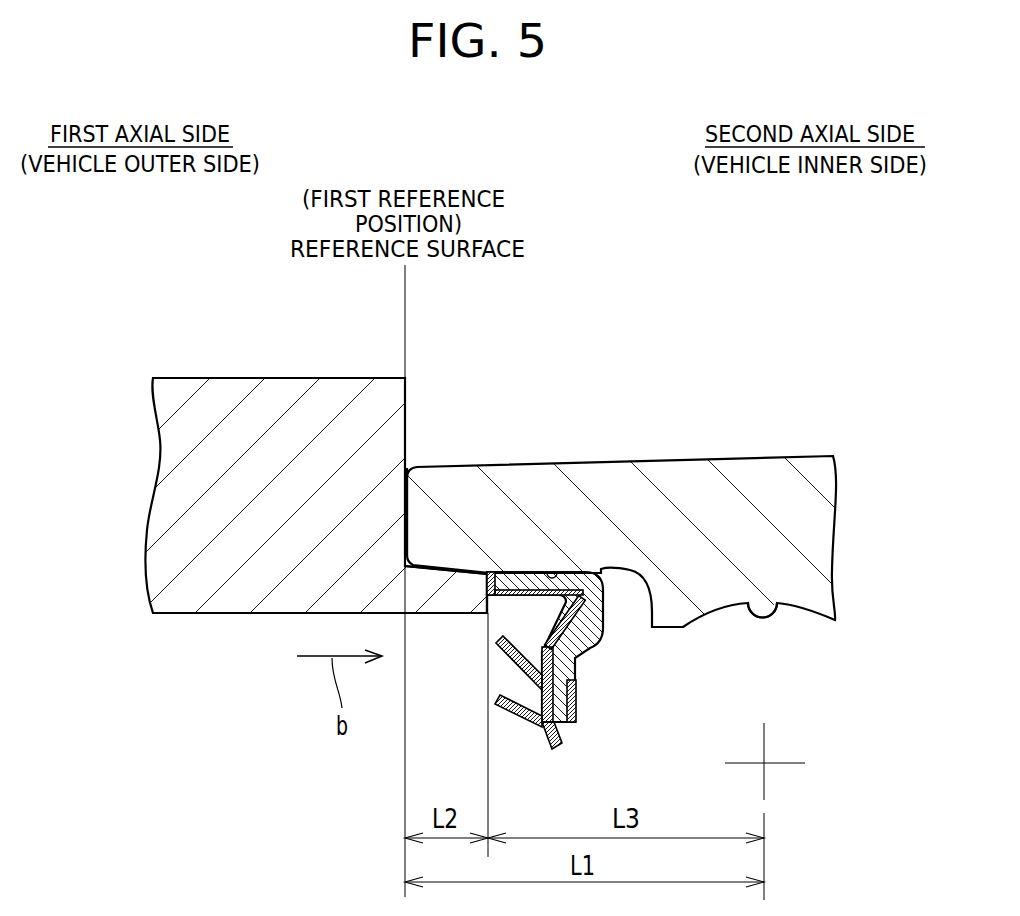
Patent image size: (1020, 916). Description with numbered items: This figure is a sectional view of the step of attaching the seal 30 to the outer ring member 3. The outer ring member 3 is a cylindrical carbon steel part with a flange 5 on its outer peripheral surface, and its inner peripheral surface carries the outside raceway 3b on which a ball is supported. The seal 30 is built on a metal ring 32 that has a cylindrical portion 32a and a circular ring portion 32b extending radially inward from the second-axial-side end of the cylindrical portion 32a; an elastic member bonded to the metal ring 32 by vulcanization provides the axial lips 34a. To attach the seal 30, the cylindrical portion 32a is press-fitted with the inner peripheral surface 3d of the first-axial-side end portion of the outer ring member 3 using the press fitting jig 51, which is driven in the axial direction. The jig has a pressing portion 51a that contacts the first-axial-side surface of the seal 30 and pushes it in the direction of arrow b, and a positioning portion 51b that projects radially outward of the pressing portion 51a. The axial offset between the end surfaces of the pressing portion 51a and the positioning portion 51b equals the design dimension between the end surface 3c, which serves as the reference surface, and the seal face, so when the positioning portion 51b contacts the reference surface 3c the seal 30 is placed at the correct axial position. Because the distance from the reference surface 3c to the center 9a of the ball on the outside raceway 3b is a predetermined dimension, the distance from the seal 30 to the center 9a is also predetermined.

The outer ring member 3 is at (663, 442).
The outside raceway 3b is at (775, 603).
The end surface 3c is at (405, 508).
The inner peripheral surface 3d is at (552, 572).
The flange 5 is at (236, 597).
The press fitting jig 51 is at (290, 362).
The pressing portion 51a is at (450, 598).
The positioning portion 51b is at (218, 398).
The seal 30 is at (529, 615).
The metal ring 32 is at (624, 640).
The cylindrical portion 32a is at (517, 588).
The circular ring portion 32b is at (593, 656).
The axial lip 34a is at (503, 652).
The center of the ball 9a is at (764, 763).